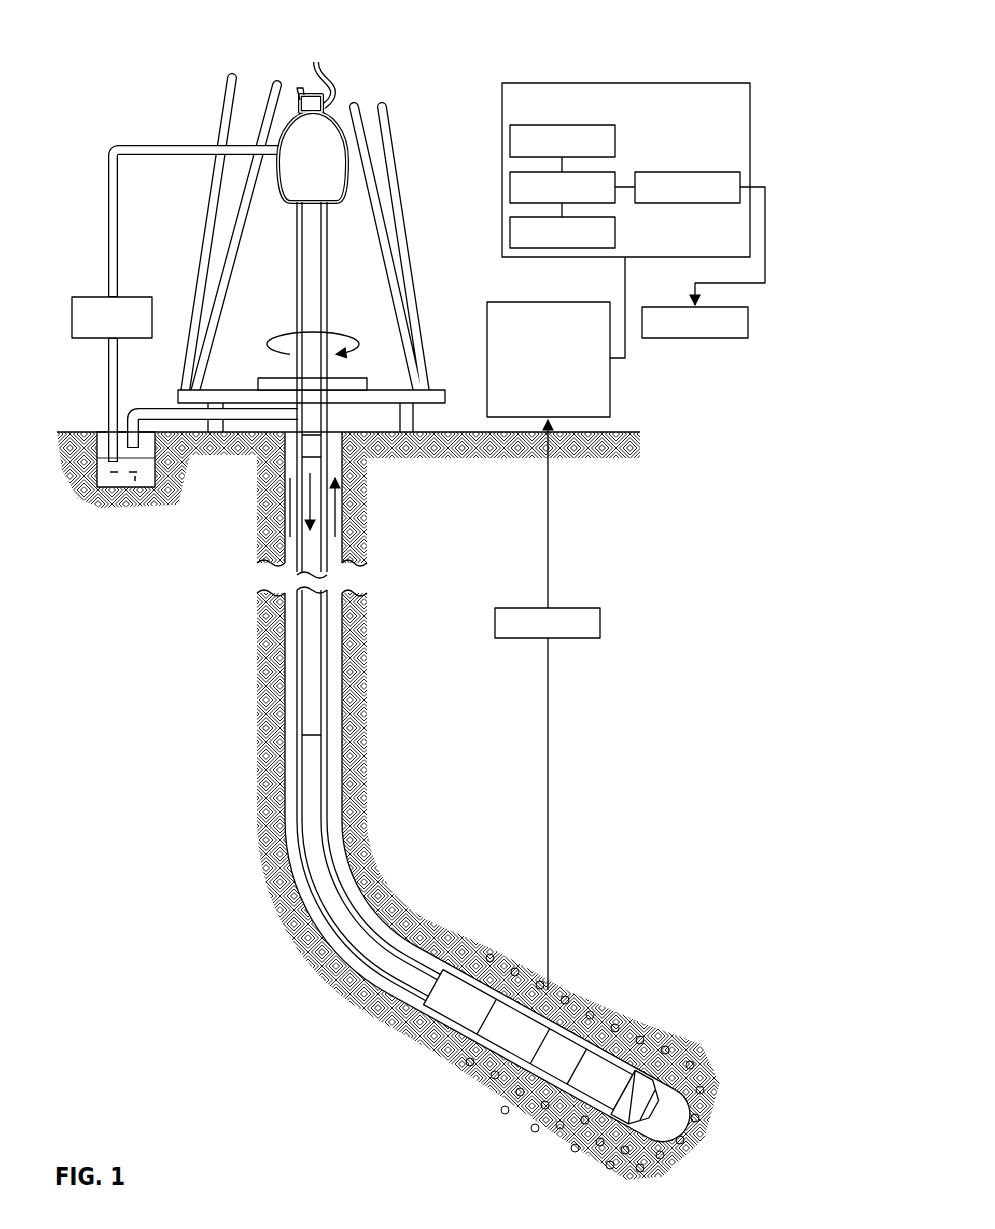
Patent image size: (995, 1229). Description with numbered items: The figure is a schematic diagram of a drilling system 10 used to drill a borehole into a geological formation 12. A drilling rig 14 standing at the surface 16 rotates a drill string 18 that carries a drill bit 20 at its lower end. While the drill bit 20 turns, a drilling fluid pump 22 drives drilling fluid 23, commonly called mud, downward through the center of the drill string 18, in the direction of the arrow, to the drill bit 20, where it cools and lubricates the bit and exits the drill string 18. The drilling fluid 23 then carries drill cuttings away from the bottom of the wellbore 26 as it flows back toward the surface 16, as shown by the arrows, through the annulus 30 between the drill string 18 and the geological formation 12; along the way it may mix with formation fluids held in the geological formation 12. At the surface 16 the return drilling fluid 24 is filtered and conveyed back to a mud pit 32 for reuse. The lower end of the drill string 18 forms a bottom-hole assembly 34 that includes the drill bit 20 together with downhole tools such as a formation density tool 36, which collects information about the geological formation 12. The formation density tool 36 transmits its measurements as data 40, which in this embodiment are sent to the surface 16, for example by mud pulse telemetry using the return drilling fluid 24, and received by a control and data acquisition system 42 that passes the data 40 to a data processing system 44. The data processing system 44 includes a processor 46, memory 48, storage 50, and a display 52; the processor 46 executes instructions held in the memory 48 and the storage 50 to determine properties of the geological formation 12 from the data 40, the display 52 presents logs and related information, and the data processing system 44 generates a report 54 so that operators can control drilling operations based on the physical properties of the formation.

The drilling system 10 is at (413, 96).
The geological formation 12 is at (473, 758).
The drilling rig 14 is at (410, 164).
The surface 16 is at (475, 427).
The drill string 18 is at (313, 416).
The drill bit 20 is at (643, 1097).
The drilling fluid pump 22 is at (92, 297).
The drilling fluid 23 is at (308, 515).
The return drilling fluid 24 is at (287, 510).
The wellbore 26 is at (665, 1143).
The annulus 30 is at (335, 431).
The mud pit 32 is at (135, 478).
The bottom-hole assembly 34 is at (625, 1178).
The formation density tool 36 is at (488, 1020).
The data 40 is at (513, 608).
The control and data acquisition system 42 is at (513, 302).
The data processing system 44 is at (614, 182).
The processor 46 is at (510, 188).
The memory 48 is at (510, 142).
The storage 50 is at (510, 233).
The display 52 is at (670, 172).
The report 54 is at (678, 308).